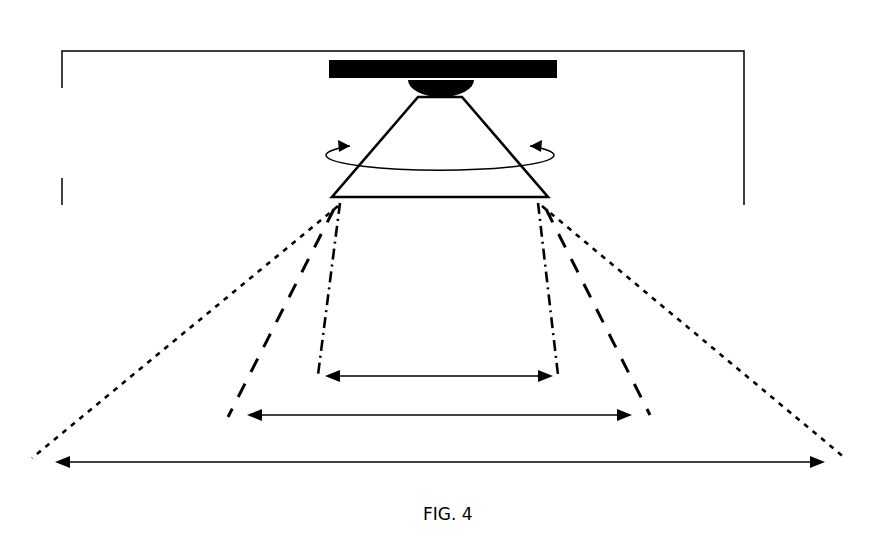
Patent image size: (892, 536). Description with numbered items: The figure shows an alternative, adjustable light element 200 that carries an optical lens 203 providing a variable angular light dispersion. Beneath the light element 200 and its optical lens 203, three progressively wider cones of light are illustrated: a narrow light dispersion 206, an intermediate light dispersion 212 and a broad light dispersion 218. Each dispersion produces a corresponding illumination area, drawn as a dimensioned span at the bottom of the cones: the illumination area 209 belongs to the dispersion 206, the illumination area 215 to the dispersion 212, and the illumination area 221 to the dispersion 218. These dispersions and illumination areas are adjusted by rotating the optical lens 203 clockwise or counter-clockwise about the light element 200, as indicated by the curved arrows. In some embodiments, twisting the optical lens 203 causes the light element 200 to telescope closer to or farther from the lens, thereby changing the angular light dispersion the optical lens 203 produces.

The light element 200 is at (460, 60).
The optical lens 203 is at (340, 187).
The variable light dispersion 206 is at (328, 312).
The illumination area 209 is at (439, 369).
The variable light dispersion 212 is at (258, 355).
The illumination area 215 is at (439, 408).
The variable light dispersion 218 is at (225, 302).
The illumination area 221 is at (440, 455).